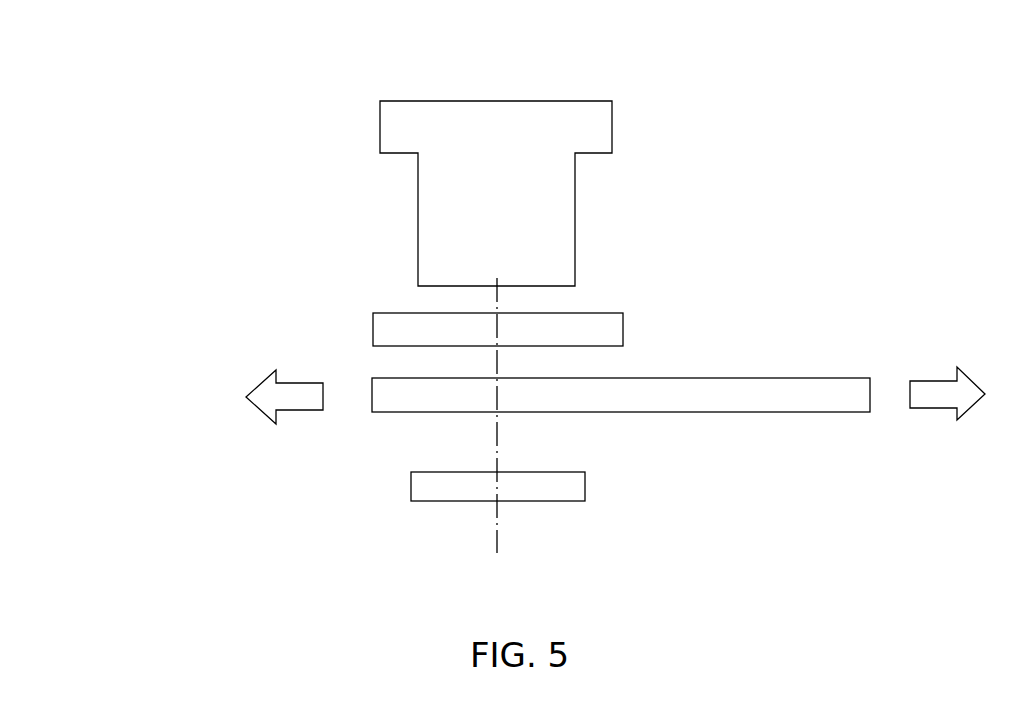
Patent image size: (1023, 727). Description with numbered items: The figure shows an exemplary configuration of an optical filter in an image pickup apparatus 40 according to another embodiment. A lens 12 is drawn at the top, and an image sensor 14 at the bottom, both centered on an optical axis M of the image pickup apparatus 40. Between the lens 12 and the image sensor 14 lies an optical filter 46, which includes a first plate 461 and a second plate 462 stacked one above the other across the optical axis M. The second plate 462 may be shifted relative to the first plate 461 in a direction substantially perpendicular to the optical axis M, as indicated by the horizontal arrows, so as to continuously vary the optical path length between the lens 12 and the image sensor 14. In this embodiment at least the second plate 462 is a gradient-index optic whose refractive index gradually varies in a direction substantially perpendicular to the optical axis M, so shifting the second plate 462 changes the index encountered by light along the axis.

The image pickup apparatus 40 is at (185, 72).
The lens 12 is at (508, 220).
The optical filter 46 is at (621, 362).
The first plate 461 is at (570, 339).
The second plate 462 is at (651, 403).
The image sensor 14 is at (526, 496).
The optical axis M is at (497, 540).